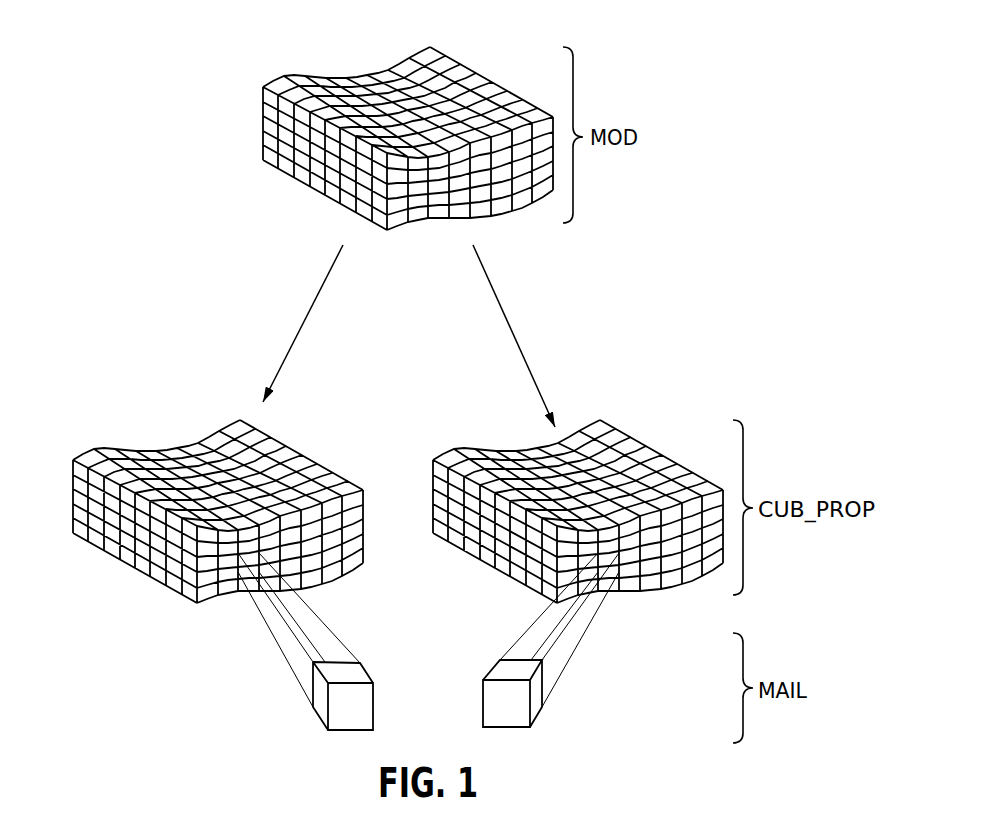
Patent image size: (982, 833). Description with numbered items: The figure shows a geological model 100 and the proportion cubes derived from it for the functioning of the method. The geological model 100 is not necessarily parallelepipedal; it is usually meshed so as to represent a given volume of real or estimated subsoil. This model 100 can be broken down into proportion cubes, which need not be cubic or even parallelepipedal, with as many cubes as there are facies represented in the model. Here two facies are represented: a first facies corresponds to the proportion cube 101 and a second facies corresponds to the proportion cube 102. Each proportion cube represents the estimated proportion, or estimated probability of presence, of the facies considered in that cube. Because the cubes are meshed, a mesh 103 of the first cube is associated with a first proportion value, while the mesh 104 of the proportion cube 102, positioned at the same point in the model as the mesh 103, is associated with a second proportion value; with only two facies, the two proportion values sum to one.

The geological model 100 is at (350, 68).
The proportion cube 101 is at (162, 442).
The proportion cube 102 is at (660, 442).
The mesh 103 is at (312, 718).
The mesh 104 is at (542, 717).